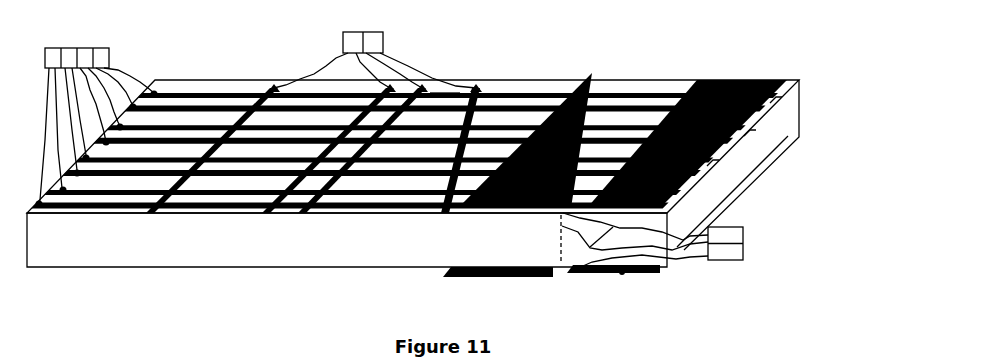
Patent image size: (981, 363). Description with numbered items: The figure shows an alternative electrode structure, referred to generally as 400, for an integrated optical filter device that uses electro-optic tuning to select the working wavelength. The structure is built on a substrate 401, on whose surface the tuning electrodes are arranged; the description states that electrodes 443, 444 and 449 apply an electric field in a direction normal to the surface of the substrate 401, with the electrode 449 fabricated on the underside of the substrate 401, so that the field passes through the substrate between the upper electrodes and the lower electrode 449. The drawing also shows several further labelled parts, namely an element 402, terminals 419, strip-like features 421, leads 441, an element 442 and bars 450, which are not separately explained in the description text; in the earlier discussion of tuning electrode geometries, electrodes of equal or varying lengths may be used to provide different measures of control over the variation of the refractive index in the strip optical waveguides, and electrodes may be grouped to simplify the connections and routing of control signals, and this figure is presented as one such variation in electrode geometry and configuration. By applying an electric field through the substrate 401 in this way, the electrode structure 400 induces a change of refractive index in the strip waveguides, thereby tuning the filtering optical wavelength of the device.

The electrode structure for electro-optic tuning 400 is at (508, 43).
The substrate 401 is at (737, 170).
The electrode 402 is at (650, 97).
The power supply terminals 419 is at (112, 32).
The electrode strips 421 is at (178, 90).
The lead wires 441 is at (303, 92).
The electrode 442 is at (443, 93).
The electrode 443 is at (575, 83).
The electrode 444 is at (720, 82).
The electrode 449 is at (443, 277).
The diagonal bus bar electrodes 450 is at (150, 213).